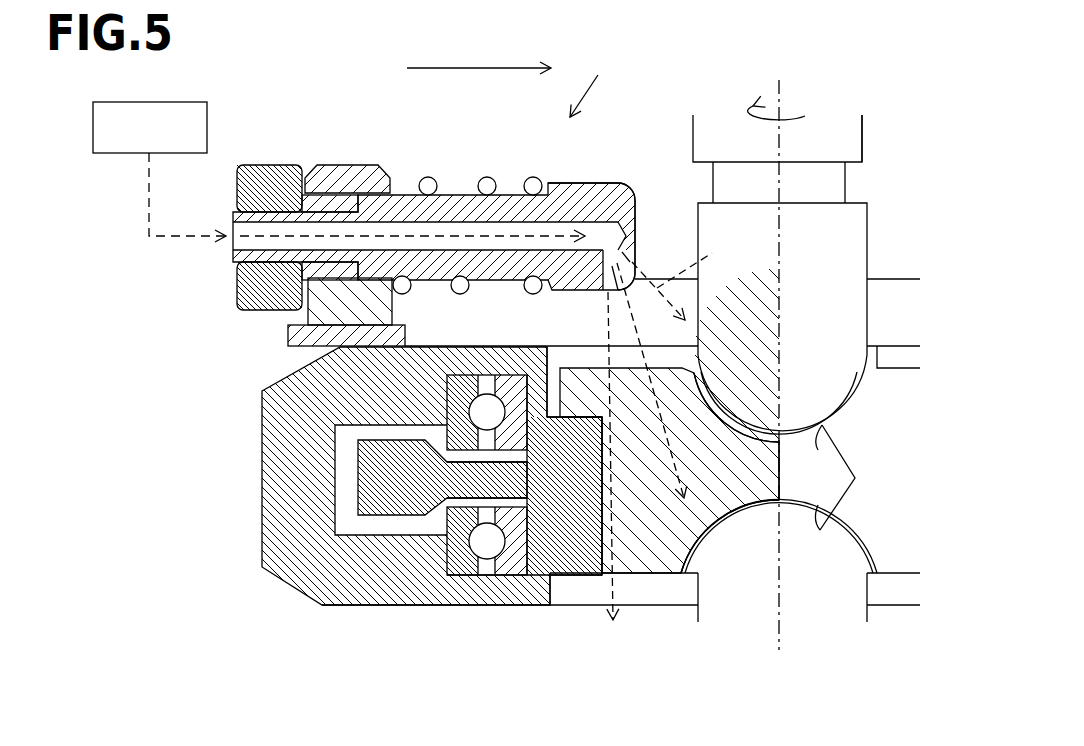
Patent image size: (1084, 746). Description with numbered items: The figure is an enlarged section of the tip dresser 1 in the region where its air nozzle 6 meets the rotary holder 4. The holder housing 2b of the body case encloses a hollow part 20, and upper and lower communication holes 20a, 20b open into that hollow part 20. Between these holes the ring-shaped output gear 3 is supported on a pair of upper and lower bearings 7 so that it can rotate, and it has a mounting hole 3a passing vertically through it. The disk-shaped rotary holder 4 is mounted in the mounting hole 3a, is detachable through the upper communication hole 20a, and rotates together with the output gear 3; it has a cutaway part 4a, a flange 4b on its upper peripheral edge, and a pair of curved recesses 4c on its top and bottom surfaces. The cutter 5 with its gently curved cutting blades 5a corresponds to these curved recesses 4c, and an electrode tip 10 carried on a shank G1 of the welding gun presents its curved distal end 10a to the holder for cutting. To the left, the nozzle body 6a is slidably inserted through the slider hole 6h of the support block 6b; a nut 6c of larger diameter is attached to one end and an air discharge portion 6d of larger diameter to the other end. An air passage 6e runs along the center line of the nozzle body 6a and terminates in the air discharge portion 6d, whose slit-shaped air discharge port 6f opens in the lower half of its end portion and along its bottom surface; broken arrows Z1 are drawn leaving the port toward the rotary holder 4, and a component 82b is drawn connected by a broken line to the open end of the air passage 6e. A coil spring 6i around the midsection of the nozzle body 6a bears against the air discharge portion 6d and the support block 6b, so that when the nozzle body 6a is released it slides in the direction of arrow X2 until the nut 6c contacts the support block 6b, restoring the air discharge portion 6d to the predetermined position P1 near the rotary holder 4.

The tip dresser 1 is at (288, 98).
The nozzle body 6 is at (342, 143).
The nozzle body 6a is at (592, 163).
The support block 6b is at (377, 163).
The nut 6c is at (258, 160).
The air discharge portion 6d is at (632, 192).
The air passage 6e is at (557, 213).
The air discharge port 6f is at (635, 253).
The slider hole 6h is at (364, 196).
The coil spring 6i is at (488, 172).
The lubricant supply device 82b is at (93, 155).
The holder housing 2b is at (266, 388).
The hollow part 20 is at (348, 437).
The upper communication hole 20a is at (553, 346).
The lower communication hole 20b is at (558, 607).
The output gear 3 is at (356, 498).
The mounting hole 3a is at (608, 568).
The bearings 7 is at (447, 398).
The rotary holder 4 is at (655, 577).
The cutaway part 4a is at (907, 413).
The flange 4b is at (592, 377).
The curved recesses 4c is at (717, 418).
The cutter 5 is at (893, 578).
The cutting blades 5a is at (792, 499).
The electrode tips 10 is at (868, 242).
The curved distal ends 10a is at (862, 405).
The shanks G1 is at (862, 143).
The arrow X2 is at (479, 51).
The predetermined position P1 is at (625, 67).
The lubricant flow Z1 is at (689, 361).